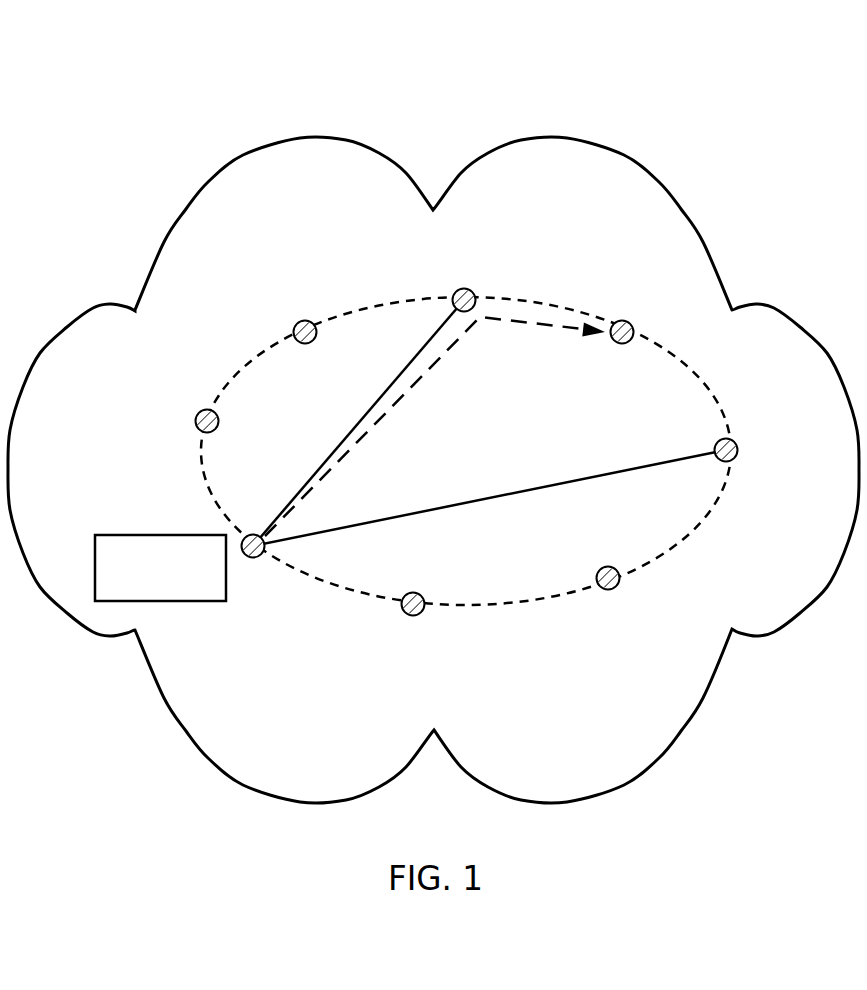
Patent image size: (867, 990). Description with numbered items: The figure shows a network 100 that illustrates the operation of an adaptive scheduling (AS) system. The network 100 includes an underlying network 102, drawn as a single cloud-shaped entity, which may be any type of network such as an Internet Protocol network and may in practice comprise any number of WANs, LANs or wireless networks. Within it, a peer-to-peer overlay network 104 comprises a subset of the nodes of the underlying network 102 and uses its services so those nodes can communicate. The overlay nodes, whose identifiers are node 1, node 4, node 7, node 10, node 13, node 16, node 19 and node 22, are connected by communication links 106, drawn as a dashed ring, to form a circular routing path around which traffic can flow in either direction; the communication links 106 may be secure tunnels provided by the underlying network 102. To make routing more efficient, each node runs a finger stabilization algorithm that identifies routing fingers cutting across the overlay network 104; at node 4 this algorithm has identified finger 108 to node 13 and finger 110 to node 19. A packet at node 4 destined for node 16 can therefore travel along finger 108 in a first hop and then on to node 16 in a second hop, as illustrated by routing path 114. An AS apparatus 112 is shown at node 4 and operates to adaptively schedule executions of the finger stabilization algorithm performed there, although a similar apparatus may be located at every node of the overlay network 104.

The network 100 is at (433, 407).
The underlying network 102 is at (257, 145).
The peer-to-peer overlay network 104 is at (470, 462).
The communication links 106 is at (413, 300).
The finger 108 is at (378, 400).
The finger 110 is at (574, 476).
The AS apparatus 112 is at (157, 535).
The routing path 114 is at (432, 366).
The node 1 is at (414, 624).
The node 4 is at (253, 565).
The node 7 is at (194, 425).
The node 10 is at (300, 316).
The node 13 is at (473, 286).
The node 16 is at (636, 324).
The node 19 is at (743, 449).
The node 22 is at (618, 595).